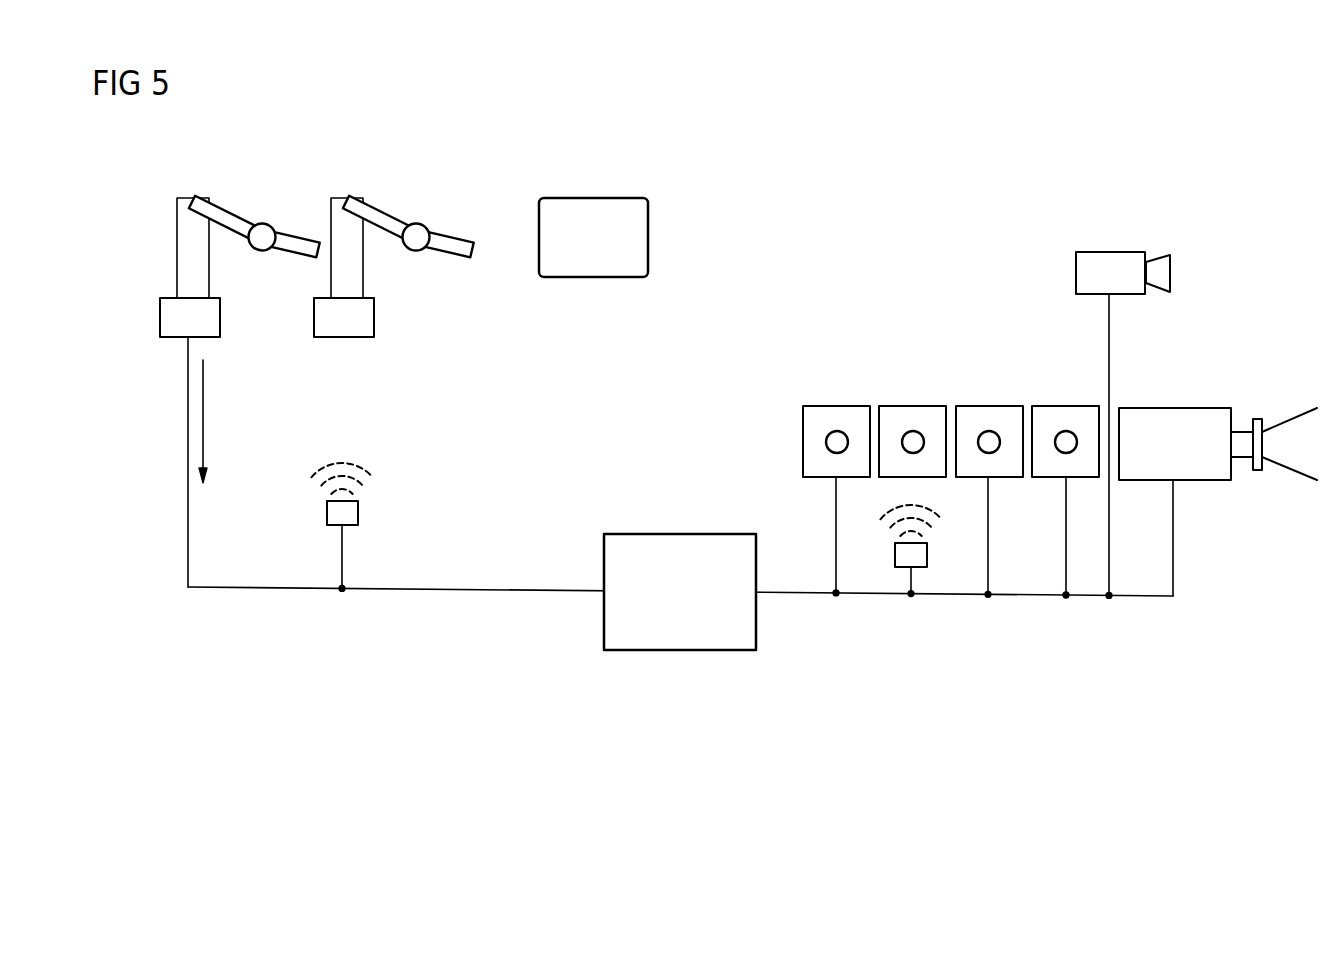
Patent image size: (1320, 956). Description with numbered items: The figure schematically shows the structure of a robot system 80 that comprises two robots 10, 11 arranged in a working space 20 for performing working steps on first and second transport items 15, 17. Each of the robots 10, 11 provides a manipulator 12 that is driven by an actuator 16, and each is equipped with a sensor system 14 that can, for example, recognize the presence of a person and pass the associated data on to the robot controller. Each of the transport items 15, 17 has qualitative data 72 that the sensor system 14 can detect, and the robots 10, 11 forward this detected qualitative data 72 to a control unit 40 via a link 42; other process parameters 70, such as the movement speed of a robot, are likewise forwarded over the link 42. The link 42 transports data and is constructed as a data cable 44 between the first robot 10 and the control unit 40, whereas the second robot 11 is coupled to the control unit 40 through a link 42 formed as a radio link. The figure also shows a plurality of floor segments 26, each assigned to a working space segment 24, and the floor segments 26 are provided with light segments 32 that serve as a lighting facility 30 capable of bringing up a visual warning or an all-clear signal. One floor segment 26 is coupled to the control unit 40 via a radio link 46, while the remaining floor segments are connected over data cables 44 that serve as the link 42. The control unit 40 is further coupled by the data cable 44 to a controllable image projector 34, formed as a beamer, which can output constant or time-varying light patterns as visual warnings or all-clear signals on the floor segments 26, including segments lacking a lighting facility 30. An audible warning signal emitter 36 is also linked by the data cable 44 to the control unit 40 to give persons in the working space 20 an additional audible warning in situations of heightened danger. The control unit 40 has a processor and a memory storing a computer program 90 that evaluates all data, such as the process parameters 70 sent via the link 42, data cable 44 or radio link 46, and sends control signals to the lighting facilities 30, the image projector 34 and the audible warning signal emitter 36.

The first robot 10 is at (278, 237).
The second robot 11 is at (278, 237).
The manipulator 12 is at (233, 207).
The sensor system 14 is at (177, 281).
The first transport item 15 is at (597, 212).
The actuator 16 is at (200, 201).
The second transport item 17 is at (565, 211).
The working space 20 is at (749, 205).
The working space segment 24 is at (944, 465).
The floor segment 26 is at (944, 465).
The lighting facility 30 is at (963, 412).
The light segment 32 is at (842, 440).
The controllable image projector 34 is at (1175, 420).
The audible warning signal emitter 36 is at (1109, 268).
The control unit 40 is at (680, 559).
The link 42 is at (650, 496).
The data cable 44 is at (187, 423).
The radio link 46 is at (380, 491).
The process parameters 70 is at (205, 423).
The qualitative data 72 is at (597, 212).
The robot system 80 is at (737, 131).
The computer program 90 is at (681, 533).